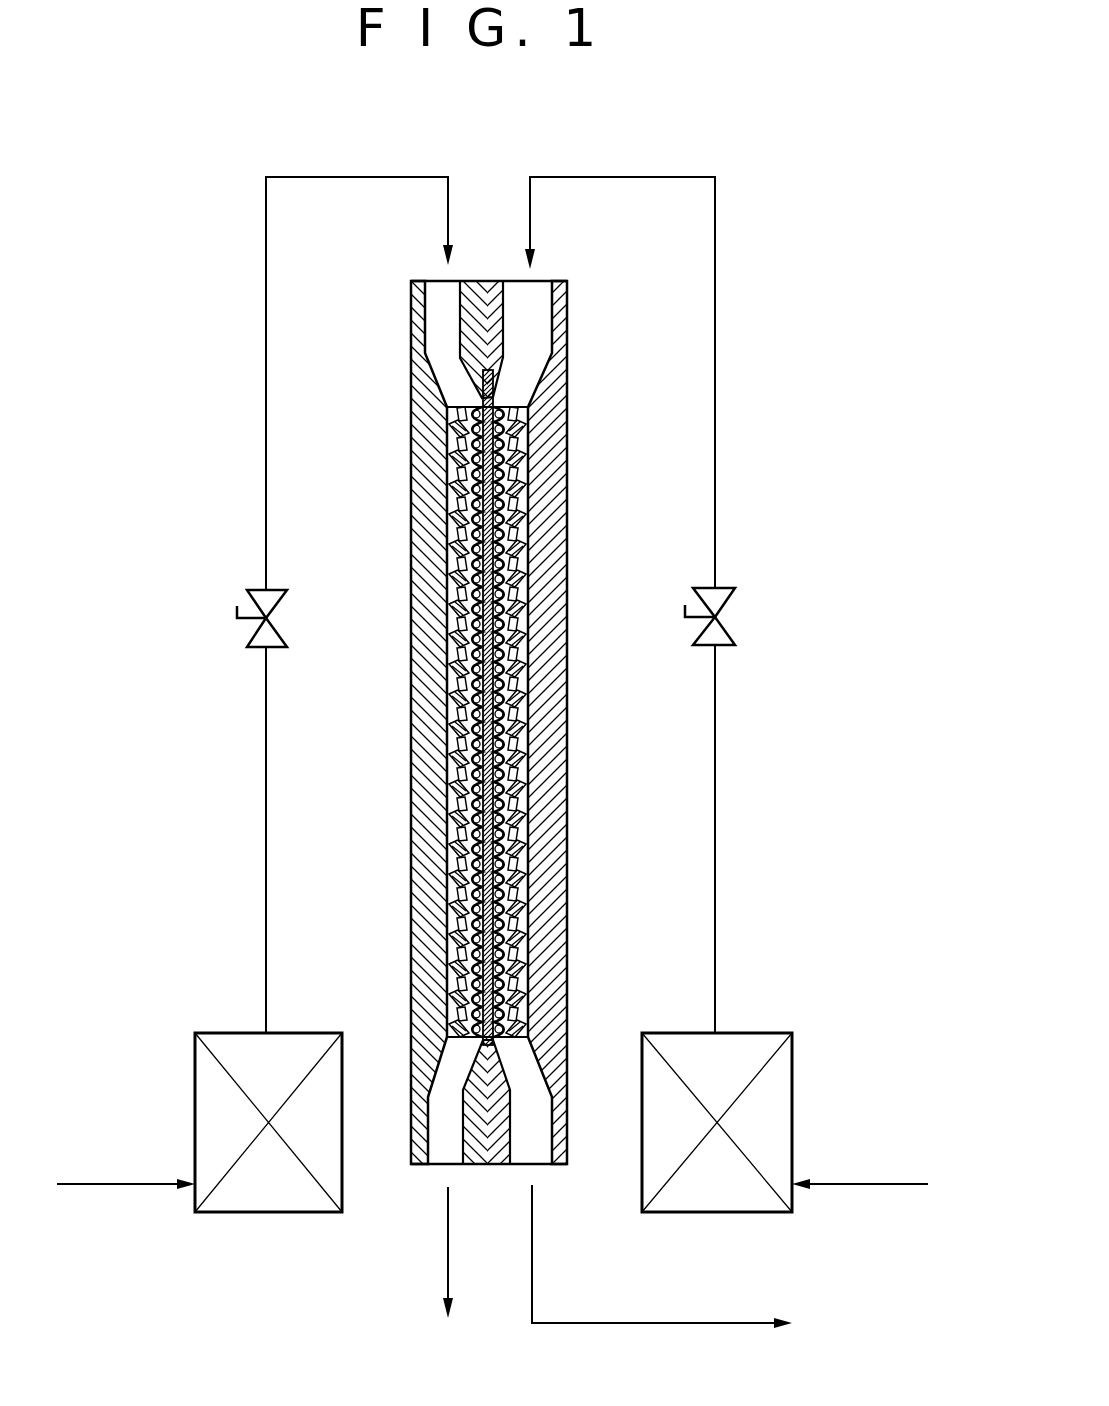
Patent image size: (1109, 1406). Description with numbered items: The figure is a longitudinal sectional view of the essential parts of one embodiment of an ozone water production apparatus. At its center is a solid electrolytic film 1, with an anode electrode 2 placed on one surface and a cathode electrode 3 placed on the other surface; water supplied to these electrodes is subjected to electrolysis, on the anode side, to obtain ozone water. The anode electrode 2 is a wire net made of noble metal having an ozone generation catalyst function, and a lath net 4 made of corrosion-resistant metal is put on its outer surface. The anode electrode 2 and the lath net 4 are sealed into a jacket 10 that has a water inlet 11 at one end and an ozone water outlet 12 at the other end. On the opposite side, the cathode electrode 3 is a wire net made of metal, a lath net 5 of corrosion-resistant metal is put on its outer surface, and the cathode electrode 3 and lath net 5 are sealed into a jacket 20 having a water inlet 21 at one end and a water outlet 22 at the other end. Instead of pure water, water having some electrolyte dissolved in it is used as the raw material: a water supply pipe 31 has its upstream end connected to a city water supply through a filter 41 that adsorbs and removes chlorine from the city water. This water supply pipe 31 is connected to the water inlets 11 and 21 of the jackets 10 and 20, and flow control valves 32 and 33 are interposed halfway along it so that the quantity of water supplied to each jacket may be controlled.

The solid electrolytic film 1 is at (495, 390).
The anode electrode 2 is at (515, 466).
The cathode electrode 3 is at (455, 466).
The lath net 4 is at (528, 800).
The lath net 5 is at (447, 800).
The jacket 10 is at (568, 672).
The jacket 20 is at (412, 660).
The water inlet 11 is at (530, 325).
The water inlet 21 is at (435, 325).
The ozone water outlet 12 is at (540, 1165).
The water outlet 22 is at (440, 1165).
The water supply pipe 31 is at (266, 834).
The flow control valve 32 is at (726, 588).
The flow control valve 33 is at (250, 590).
The filter 41 is at (205, 1033).